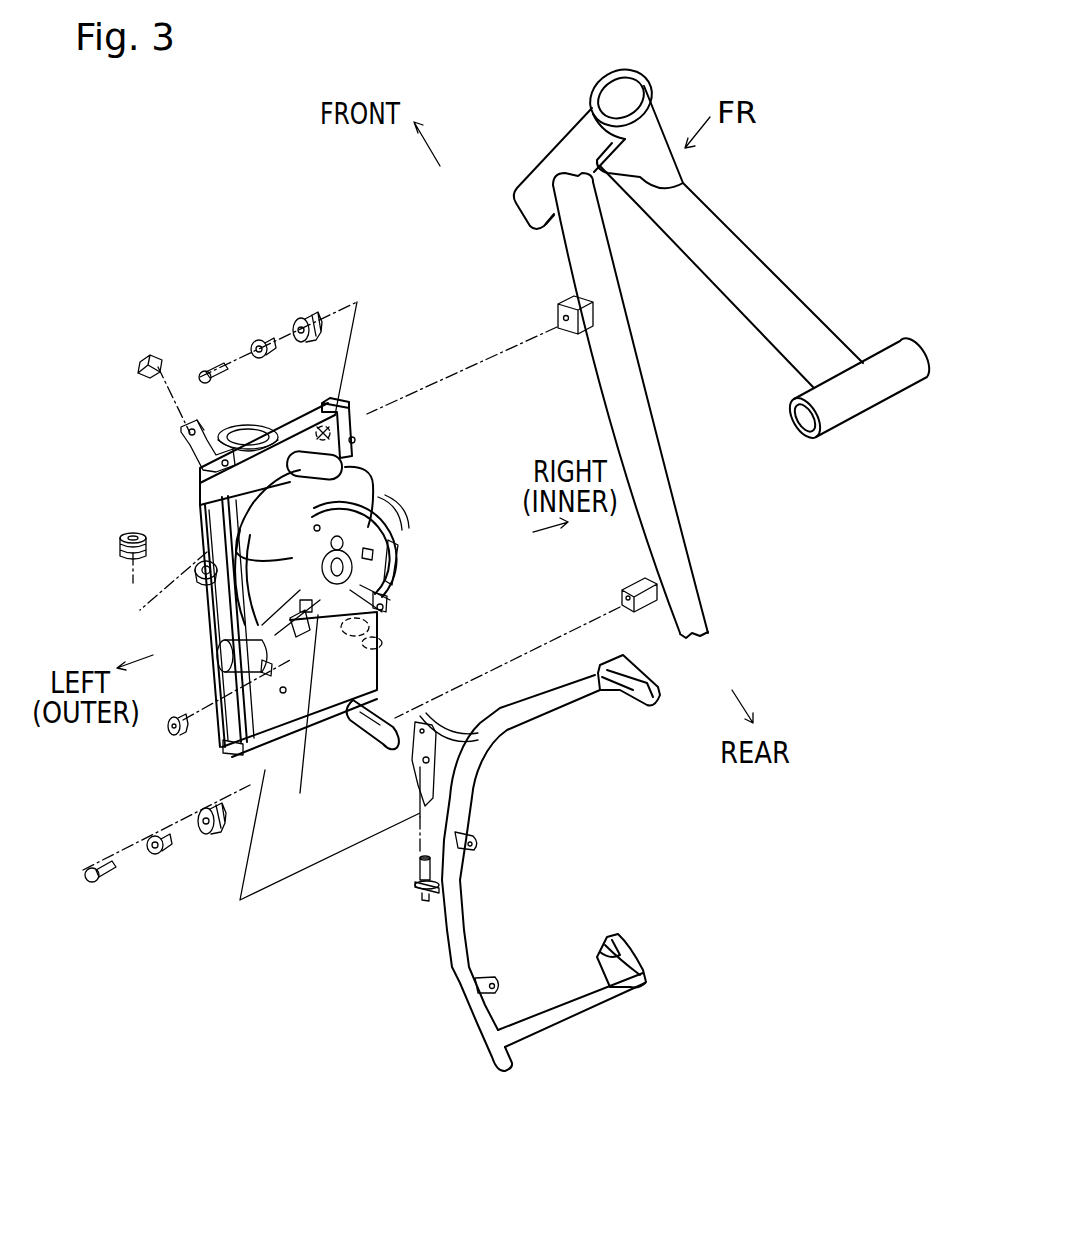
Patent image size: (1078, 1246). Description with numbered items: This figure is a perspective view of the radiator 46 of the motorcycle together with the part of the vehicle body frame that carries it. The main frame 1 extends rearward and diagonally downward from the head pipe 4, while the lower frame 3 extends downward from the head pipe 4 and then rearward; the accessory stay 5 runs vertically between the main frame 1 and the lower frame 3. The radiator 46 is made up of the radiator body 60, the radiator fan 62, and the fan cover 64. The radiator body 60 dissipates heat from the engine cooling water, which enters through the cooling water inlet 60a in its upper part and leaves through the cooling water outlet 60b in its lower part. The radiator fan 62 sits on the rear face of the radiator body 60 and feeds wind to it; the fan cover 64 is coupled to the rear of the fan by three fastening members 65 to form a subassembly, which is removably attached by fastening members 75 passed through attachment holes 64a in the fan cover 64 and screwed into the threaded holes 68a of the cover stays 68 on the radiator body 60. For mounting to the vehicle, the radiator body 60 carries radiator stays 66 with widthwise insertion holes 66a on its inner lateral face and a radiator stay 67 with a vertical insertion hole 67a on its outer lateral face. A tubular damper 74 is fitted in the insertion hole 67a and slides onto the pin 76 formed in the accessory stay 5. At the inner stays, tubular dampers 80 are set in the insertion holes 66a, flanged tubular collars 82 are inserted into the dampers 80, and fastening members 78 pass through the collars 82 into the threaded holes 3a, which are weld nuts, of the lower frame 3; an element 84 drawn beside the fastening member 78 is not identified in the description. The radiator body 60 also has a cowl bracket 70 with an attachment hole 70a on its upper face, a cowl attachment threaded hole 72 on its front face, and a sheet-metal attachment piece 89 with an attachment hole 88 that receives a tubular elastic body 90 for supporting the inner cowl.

The main frame 1 is at (758, 265).
The lower frame 3 is at (658, 448).
The threaded hole 3a is at (556, 308).
The head pipe 4 is at (572, 133).
The accessory stay 5 is at (450, 990).
The radiator 46 is at (176, 486).
The radiator body 60 is at (367, 677).
The cooling water inlet 60a is at (330, 467).
The cooling water outlet 60b is at (383, 747).
The radiator fan 62 is at (347, 547).
The fan cover 64 is at (353, 487).
The attachment hole 64a is at (220, 647).
The fastening member 65 is at (367, 520).
The radiator stay 66 is at (333, 402).
The insertion hole 66a is at (313, 427).
The radiator stay 67 is at (203, 583).
The insertion hole 67a is at (200, 572).
The cover stay 68 is at (380, 597).
The threaded hole 68a is at (232, 728).
The cowl bracket 70 is at (195, 443).
The attachment hole 70a is at (183, 427).
The cowl attachment threaded hole 72 is at (240, 760).
The tubular damper 74 is at (127, 547).
The fastening member 75 is at (353, 438).
The pin 76 is at (418, 873).
The fastening member 78 is at (213, 370).
The tubular damper 80 is at (303, 315).
The flanged tubular collar 82 is at (263, 338).
The nut 84 is at (160, 353).
The attachment hole 88 is at (365, 630).
The attachment piece 89 is at (383, 650).
The tubular elastic body 90 is at (167, 718).